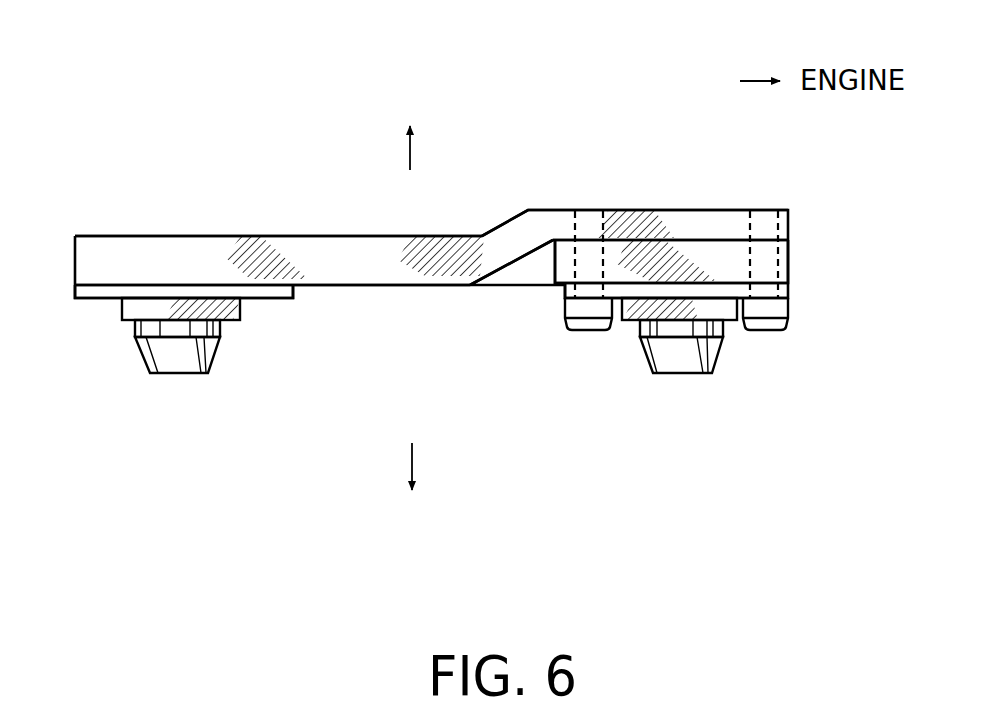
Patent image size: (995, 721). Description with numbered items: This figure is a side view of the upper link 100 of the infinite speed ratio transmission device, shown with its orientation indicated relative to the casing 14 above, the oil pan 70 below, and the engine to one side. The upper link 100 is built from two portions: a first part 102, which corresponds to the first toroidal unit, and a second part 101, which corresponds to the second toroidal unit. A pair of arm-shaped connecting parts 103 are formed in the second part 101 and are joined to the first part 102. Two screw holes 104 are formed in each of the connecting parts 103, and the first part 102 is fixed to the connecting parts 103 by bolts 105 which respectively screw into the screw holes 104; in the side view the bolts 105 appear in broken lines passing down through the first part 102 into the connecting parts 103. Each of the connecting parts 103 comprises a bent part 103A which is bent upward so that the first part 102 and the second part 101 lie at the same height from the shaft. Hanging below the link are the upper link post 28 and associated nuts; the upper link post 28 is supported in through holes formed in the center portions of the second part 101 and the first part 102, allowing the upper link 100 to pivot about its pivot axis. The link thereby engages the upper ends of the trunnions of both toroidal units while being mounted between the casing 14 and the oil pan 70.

The upper link 100 is at (310, 121).
The second part 101 is at (97, 299).
The first part 102 is at (788, 262).
The connecting parts 103 is at (423, 284).
The bent part 103A is at (510, 238).
The screw holes 104 is at (602, 224).
The bolts 105 is at (587, 331).
The upper link post 28 is at (213, 358).
The casing 14 is at (427, 125).
The oil pan 70 is at (406, 492).